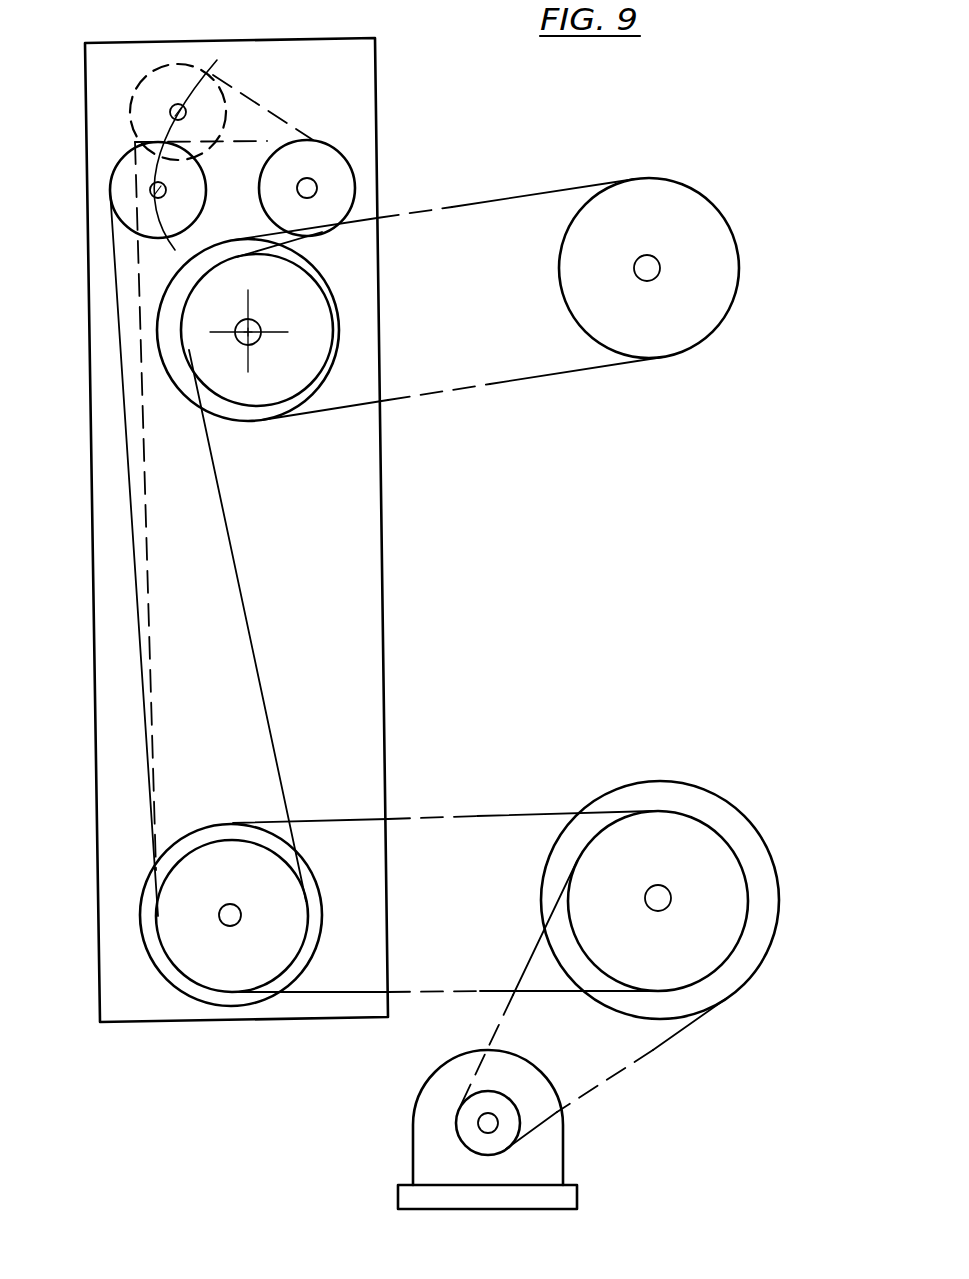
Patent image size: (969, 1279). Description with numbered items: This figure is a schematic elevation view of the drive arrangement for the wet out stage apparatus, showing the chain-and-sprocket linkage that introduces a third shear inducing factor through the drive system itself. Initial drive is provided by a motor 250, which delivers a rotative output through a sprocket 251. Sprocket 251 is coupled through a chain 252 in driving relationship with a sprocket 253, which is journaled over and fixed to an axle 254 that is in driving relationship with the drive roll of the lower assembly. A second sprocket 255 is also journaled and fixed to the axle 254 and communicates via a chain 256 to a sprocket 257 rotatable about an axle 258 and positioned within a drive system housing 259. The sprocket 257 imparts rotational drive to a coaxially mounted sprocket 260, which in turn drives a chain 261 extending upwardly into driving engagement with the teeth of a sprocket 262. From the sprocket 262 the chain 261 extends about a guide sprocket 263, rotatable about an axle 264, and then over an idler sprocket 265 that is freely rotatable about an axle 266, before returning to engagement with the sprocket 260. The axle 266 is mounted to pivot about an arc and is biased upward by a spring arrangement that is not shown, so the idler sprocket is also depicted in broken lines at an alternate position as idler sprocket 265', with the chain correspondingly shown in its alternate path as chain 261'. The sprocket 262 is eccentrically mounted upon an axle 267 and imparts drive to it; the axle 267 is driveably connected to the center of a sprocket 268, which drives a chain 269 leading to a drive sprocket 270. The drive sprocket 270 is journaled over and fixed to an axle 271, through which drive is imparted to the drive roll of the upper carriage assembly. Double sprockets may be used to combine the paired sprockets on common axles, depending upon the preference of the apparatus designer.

The motor 250 is at (564, 1158).
The sprocket 251 is at (458, 1110).
The chain 252 is at (654, 1051).
The sprocket 253 is at (733, 805).
The axle 254 is at (652, 911).
The second sprocket 255 is at (744, 936).
The chain 256 is at (505, 813).
The sprocket 257 is at (320, 876).
The axle 258 is at (226, 926).
The drive system housing 259 is at (377, 78).
The sprocket 260 is at (302, 952).
The chain 261 is at (227, 503).
The chain 261' is at (224, 467).
The sprocket 262 is at (311, 276).
The guide sprocket 263 is at (356, 184).
The axle 264 is at (312, 162).
The idler sprocket 265 is at (126, 155).
The idler sprocket 265' is at (192, 81).
The axle 266 is at (166, 190).
The axle 267 is at (258, 323).
The sprocket 268 is at (228, 420).
The chain 269 is at (543, 381).
The drive sprocket 270 is at (740, 273).
The axle 271 is at (634, 268).